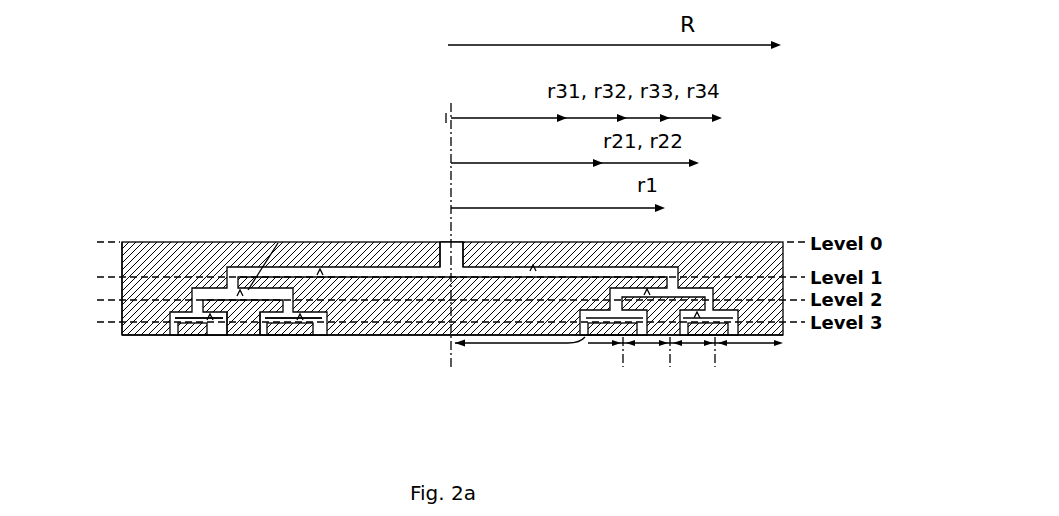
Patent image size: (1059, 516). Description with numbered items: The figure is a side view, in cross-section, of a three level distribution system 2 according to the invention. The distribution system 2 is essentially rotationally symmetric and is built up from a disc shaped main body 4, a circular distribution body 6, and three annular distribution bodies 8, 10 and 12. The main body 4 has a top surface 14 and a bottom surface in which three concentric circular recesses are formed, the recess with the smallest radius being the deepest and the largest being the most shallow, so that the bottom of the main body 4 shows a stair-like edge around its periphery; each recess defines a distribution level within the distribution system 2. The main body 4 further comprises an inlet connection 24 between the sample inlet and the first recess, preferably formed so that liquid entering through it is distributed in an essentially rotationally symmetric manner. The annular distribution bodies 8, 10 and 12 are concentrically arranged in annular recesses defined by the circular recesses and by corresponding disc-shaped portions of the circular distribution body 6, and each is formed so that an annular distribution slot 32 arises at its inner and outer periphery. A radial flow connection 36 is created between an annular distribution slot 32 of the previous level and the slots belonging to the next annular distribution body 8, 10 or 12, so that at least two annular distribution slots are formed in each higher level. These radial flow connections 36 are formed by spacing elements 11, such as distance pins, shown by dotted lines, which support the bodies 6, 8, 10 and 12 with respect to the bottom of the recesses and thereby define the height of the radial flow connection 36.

The distribution system 2 is at (152, 125).
The main body 4 is at (137, 242).
The circular distribution body 6 is at (440, 336).
The annular distribution body 8 is at (250, 336).
The annular distribution body 10 is at (200, 336).
The spacing elements 11 is at (585, 338).
The annular distribution body 12 is at (290, 336).
The top surface 14 is at (133, 336).
The inlet connection 24 is at (440, 243).
The annular distribution slot 32 is at (322, 336).
The radial flow connection 36 is at (375, 243).